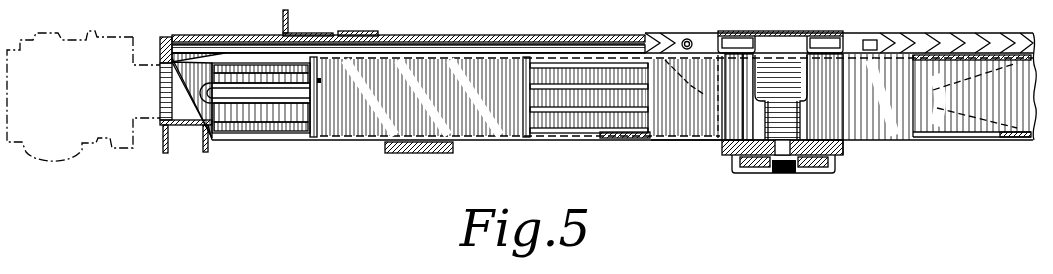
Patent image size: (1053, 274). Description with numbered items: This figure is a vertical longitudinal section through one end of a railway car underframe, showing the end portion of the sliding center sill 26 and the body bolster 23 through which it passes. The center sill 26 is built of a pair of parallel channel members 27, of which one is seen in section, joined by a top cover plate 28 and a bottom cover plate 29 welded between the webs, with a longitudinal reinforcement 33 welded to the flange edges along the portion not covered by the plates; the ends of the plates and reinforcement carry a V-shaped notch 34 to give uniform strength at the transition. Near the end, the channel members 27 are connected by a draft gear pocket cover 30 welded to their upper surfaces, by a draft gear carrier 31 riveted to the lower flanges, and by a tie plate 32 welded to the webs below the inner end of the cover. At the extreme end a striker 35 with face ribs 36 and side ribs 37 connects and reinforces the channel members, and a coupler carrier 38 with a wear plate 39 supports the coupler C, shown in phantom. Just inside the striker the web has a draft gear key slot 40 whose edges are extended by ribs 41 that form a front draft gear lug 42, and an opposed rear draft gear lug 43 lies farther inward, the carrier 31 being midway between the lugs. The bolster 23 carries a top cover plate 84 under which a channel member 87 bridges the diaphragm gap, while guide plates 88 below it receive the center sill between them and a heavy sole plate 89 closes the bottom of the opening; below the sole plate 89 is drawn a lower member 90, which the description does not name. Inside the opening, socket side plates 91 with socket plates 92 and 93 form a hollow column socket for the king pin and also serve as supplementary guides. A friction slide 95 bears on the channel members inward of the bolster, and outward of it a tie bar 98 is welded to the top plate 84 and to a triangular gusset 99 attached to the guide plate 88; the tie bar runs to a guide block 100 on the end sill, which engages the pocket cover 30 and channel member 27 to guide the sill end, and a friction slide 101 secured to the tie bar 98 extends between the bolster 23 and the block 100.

The coupler C is at (108, 30).
The body bolster 23 is at (845, 149).
The center sill 26 is at (673, 141).
The channel member 27 is at (357, 128).
The top cover plate 28 is at (1008, 54).
The bottom cover plate 29 is at (1020, 138).
The draft gear pocket cover 30 is at (464, 36).
The draft gear carrier 31 is at (405, 152).
The tie plate 32 is at (621, 138).
The longitudinal reinforcement 33 is at (960, 127).
The V-shaped notch 34 is at (974, 79).
The striker 35 is at (166, 36).
The face rib 36 is at (193, 48).
The side rib 37 is at (163, 93).
The coupler carrier 38 is at (168, 150).
The wear plate 39 is at (166, 121).
The draft gear key slot 40 is at (277, 101).
The rib 41 is at (247, 103).
The front draft gear lug 42 is at (320, 80).
The rear draft gear lug 43 is at (522, 78).
The top cover plate 84 is at (823, 34).
The channel member 87 is at (803, 46).
The guide plate 88 is at (721, 115).
The sole plate 89 is at (725, 148).
The lower housing 90 is at (793, 171).
The socket side plate 91 is at (831, 95).
The socket plate 92 is at (760, 99).
The socket plate 93 is at (808, 110).
The friction slide 95 is at (945, 34).
The tie bar 98 is at (373, 34).
The triangular gusset 99 is at (707, 87).
The guide block 100 is at (325, 43).
The friction slide 101 is at (506, 36).